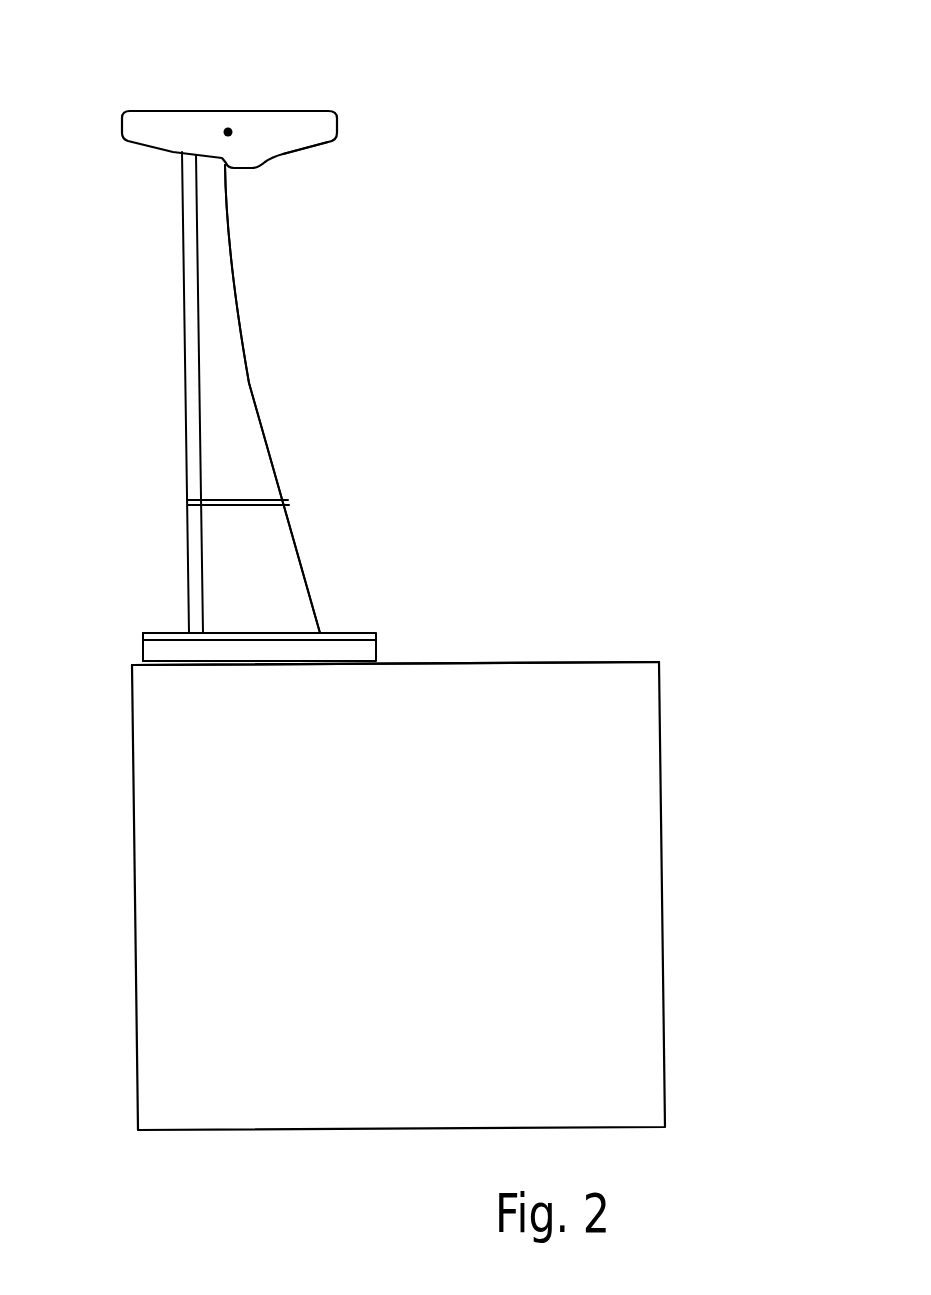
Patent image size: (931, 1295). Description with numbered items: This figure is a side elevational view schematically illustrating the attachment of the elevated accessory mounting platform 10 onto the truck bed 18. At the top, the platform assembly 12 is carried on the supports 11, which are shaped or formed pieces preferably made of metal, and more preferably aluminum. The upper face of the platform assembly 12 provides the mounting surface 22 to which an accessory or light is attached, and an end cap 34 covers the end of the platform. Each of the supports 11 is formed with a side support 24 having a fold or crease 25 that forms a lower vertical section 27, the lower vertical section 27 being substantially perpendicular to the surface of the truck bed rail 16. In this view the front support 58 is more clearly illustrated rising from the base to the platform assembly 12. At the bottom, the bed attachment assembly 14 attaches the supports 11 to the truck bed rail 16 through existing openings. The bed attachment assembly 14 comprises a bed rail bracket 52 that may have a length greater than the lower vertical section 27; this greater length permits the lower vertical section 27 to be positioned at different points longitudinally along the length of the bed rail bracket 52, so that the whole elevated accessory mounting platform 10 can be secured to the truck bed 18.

The elevated accessory mounting platform 10 is at (332, 296).
The support 11 is at (237, 248).
The platform assembly 12 is at (292, 77).
The bed attachment assembly 14 is at (357, 617).
The truck bed rail 16 is at (610, 662).
The truck bed 18 is at (685, 725).
The mounting surface 22 is at (210, 111).
The side support 24 is at (245, 385).
The fold or crease 25 is at (287, 502).
The lower vertical section 27 is at (295, 563).
The end cap 34 is at (322, 136).
The bed rail bracket 52 is at (128, 647).
The front support 58 is at (183, 290).